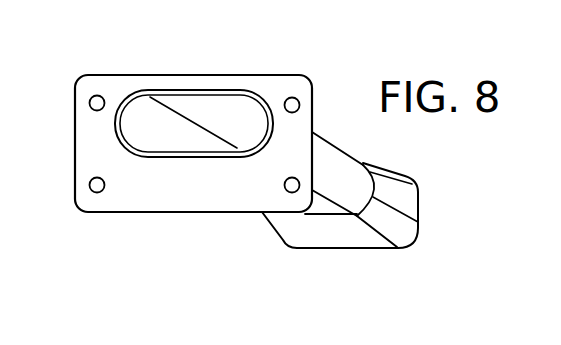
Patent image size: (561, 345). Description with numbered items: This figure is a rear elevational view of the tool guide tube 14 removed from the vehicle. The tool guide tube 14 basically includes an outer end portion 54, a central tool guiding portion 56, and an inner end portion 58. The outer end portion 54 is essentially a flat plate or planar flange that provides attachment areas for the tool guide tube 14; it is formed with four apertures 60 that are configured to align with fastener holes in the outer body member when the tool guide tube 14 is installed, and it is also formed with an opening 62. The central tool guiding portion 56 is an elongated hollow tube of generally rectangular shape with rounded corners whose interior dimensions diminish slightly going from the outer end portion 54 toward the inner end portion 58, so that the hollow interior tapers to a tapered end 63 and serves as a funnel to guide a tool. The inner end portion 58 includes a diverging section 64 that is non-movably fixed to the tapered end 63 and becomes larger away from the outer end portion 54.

The tool guide tube 14 is at (337, 100).
The outer end portion 54 is at (262, 87).
The central tool guiding portion 56 is at (335, 168).
The inner end portion 58 is at (435, 188).
The apertures 60 is at (92, 95).
The opening 62 is at (210, 110).
The tapered end 63 is at (327, 215).
The diverging section 64 is at (397, 225).